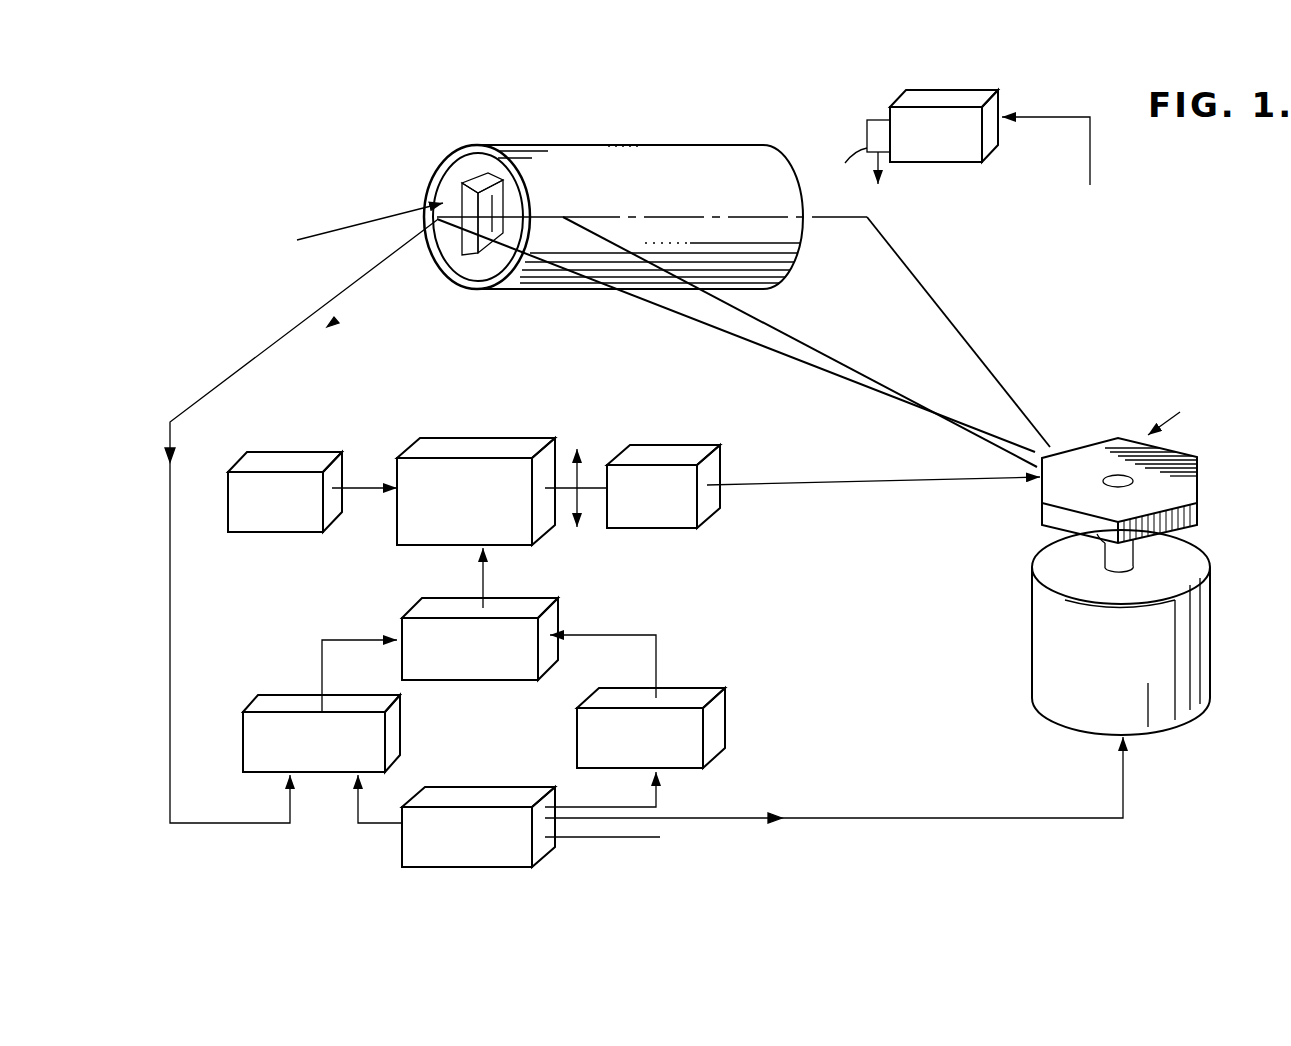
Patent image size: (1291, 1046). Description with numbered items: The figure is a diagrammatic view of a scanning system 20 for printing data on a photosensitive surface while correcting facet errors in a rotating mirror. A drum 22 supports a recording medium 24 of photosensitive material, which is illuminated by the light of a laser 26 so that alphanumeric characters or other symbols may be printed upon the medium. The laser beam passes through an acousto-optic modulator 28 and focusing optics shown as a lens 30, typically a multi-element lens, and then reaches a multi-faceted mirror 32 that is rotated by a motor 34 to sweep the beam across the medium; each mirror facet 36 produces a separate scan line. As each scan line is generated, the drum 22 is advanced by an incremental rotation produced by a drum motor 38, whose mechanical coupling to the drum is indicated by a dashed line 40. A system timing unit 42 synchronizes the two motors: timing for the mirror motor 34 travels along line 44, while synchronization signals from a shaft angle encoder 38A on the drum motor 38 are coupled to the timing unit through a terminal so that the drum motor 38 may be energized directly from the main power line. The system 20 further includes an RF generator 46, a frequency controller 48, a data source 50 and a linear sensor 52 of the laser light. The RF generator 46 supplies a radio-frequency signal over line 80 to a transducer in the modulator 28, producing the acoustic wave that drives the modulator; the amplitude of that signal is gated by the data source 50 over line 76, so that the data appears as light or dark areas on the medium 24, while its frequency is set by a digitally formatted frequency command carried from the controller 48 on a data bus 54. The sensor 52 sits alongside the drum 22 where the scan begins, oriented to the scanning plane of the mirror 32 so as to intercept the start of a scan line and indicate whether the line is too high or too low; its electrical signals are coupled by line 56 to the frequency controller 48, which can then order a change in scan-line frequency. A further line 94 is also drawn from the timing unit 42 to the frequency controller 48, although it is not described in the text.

The scanning system 20 is at (1125, 828).
The drum 22 is at (462, 283).
The recording medium 24 is at (483, 290).
The laser 26 is at (288, 452).
The acousto-optic modulator 28 is at (460, 438).
The lens 30 is at (650, 445).
The multi-faceted mirror 32 is at (1207, 465).
The motor 34 is at (1197, 648).
The mirror facet 36 is at (1182, 531).
The drum motor 38 is at (990, 140).
The shaft angle encoder 38A is at (836, 168).
The dashed line 40 is at (848, 149).
The system timing unit 42 is at (473, 787).
The line 44 is at (930, 815).
The RF generator 46 is at (500, 680).
The frequency controller 48 is at (390, 727).
The data source 50 is at (718, 725).
The linear sensor 52 is at (467, 193).
The data bus 54 is at (330, 668).
The line 56 is at (175, 590).
The line 76 is at (615, 632).
The line 80 is at (487, 580).
The timing signal line 94 is at (362, 805).